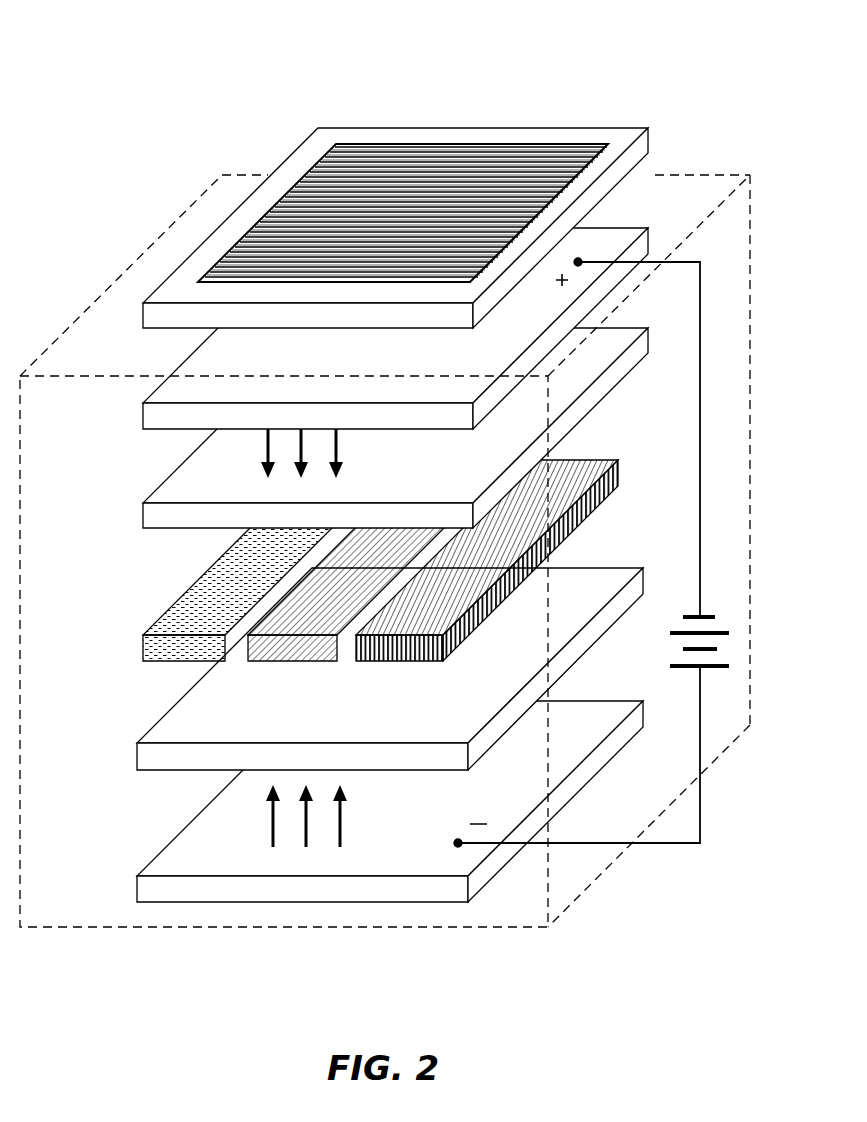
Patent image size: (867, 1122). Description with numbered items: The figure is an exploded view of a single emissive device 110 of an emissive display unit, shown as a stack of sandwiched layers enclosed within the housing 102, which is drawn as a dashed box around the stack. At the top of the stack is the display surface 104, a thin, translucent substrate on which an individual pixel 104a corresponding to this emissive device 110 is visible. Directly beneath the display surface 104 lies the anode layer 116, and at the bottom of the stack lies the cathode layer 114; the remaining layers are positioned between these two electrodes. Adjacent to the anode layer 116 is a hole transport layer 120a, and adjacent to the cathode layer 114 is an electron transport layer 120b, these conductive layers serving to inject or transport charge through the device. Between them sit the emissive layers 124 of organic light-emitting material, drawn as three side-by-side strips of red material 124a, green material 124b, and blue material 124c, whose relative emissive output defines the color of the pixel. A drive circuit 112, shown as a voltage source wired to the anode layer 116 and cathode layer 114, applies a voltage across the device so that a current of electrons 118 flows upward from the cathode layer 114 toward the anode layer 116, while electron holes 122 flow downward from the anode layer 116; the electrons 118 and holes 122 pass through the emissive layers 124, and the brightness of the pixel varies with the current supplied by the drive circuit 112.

The emissive device 110 is at (88, 61).
The housing 102 is at (137, 262).
The display surface 104 is at (395, 201).
The individual pixel 104a is at (365, 127).
The anode layer 116 is at (182, 362).
The electron holes 122 is at (348, 448).
The hole transport layer 120a is at (162, 532).
The emissive layers 124 is at (345, 583).
The red emissive material 124a is at (178, 662).
The green emissive material 124b is at (303, 662).
The blue emissive material 124c is at (420, 662).
The electron transport layer 120b is at (157, 758).
The cathode layer 114 is at (167, 863).
The electrons 118 is at (352, 815).
The drive circuit 112 is at (678, 625).